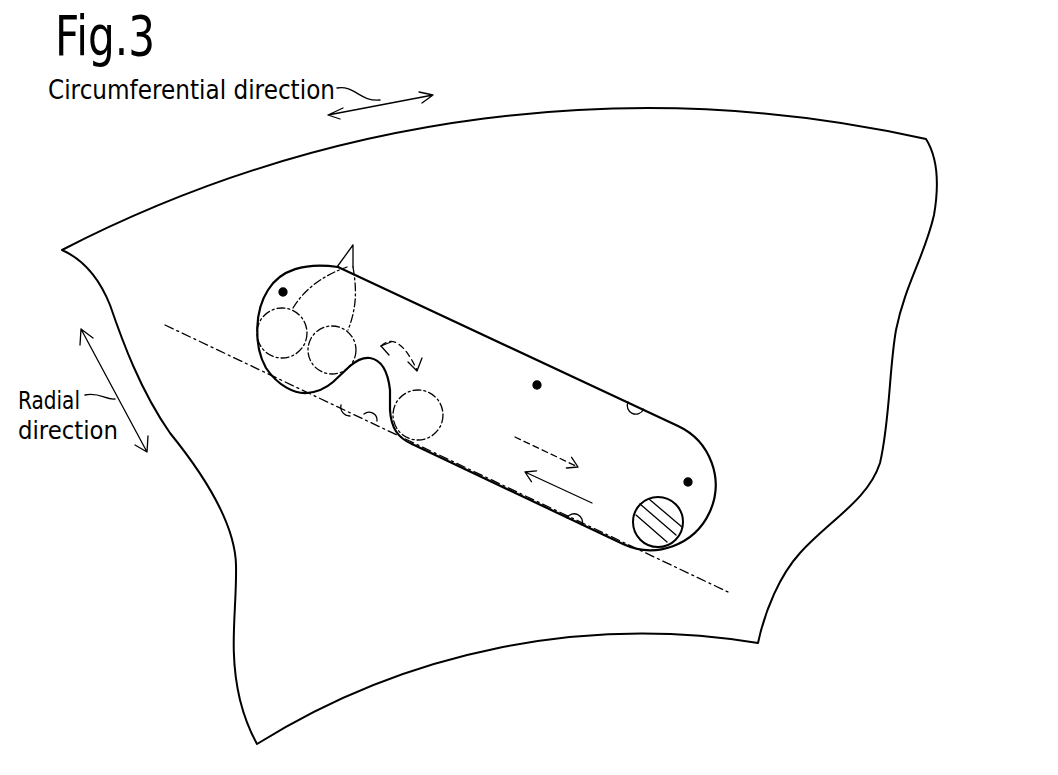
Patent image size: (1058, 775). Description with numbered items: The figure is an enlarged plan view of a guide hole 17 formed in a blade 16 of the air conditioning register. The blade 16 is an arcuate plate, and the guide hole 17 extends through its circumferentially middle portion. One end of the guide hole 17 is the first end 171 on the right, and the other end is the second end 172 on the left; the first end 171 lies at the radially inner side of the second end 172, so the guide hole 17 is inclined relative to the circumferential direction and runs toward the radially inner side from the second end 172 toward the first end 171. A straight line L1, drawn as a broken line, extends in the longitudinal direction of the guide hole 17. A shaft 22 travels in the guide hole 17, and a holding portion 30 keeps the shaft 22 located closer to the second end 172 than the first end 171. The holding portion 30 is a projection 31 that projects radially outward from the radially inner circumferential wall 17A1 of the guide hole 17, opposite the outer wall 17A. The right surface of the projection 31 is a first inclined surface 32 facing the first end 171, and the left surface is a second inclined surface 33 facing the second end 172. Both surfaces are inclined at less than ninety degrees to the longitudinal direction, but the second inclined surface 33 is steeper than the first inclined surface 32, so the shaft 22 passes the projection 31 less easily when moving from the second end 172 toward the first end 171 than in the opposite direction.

The blade 16 is at (218, 188).
The guide hole 17 is at (537, 385).
The first inner surface notch of slot 17A is at (640, 410).
The radially inner circumferential wall 17A1 is at (576, 526).
The first end 171 is at (688, 482).
The second end 172 is at (283, 292).
The shaft 22 is at (677, 588).
The holding portion 30 is at (365, 357).
The projection 31 is at (425, 311).
The first inclined surface 32 is at (428, 390).
The second inclined surface 33 is at (350, 362).
The straight line L1 is at (700, 566).